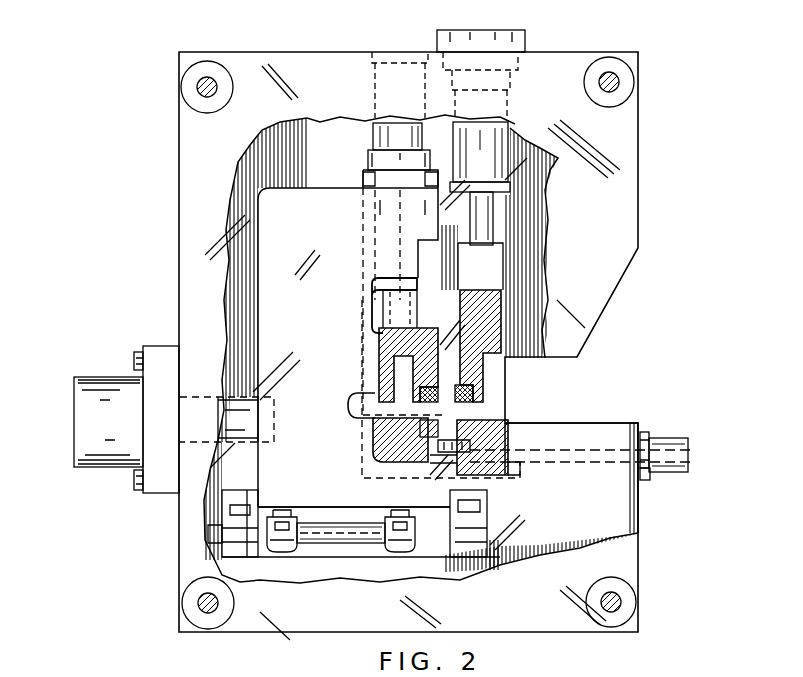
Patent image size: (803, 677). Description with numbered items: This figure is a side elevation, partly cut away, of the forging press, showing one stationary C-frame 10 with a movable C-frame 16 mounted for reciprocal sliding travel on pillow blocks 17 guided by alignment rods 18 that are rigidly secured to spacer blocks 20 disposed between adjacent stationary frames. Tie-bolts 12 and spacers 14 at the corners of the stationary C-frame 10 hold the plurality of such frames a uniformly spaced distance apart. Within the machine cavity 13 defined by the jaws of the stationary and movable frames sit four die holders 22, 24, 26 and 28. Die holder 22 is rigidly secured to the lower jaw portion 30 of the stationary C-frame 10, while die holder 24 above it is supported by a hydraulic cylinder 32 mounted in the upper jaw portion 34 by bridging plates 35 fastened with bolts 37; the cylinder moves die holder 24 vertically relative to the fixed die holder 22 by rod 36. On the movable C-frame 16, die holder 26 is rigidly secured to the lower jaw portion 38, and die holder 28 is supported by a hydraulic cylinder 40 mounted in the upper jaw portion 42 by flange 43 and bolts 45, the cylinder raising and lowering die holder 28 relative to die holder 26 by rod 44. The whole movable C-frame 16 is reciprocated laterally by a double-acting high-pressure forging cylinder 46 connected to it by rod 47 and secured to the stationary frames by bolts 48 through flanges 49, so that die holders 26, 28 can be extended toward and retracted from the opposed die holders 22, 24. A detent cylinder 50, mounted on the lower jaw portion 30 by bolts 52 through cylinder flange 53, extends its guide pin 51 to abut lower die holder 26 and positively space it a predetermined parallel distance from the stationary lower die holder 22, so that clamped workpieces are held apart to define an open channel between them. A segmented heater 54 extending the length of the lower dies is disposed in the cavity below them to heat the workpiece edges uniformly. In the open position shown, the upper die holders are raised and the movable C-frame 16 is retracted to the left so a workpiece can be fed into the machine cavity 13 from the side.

The stationary C-frame 10 is at (188, 190).
The tie-bolt 12 is at (615, 80).
The machine cavity 13 is at (362, 398).
The spacer 14 is at (622, 98).
The movable C-frame 16 is at (270, 225).
The pillow block 17 is at (446, 508).
The alignment rod 18 is at (370, 553).
The spacer block 20 is at (248, 553).
The die holder 22 is at (490, 432).
The die holder 24 is at (485, 372).
The die holder 26 is at (376, 440).
The die holder 28 is at (380, 334).
The lower jaw portion 30 is at (600, 424).
The hydraulic cylinder 32 is at (510, 152).
The upper jaw portion 34 is at (578, 52).
The bridging plate 35 is at (525, 36).
The rod 36 is at (490, 210).
The bolt 37 is at (437, 34).
The lower jaw portion 38 is at (380, 495).
The hydraulic cylinder 40 is at (372, 130).
The upper jaw portion 42 is at (360, 215).
The flange 43 is at (364, 178).
The rod 44 is at (372, 290).
The bolt 45 is at (374, 158).
The forging cylinder 46 is at (75, 386).
The rod 47 is at (240, 438).
The bolt 48 is at (137, 352).
The flange 49 is at (160, 350).
The detent cylinder 50 is at (690, 455).
The guide pin 51 is at (505, 470).
The bolt 52 is at (646, 434).
The cylinder flange 53 is at (645, 480).
The segmented heater 54 is at (450, 425).